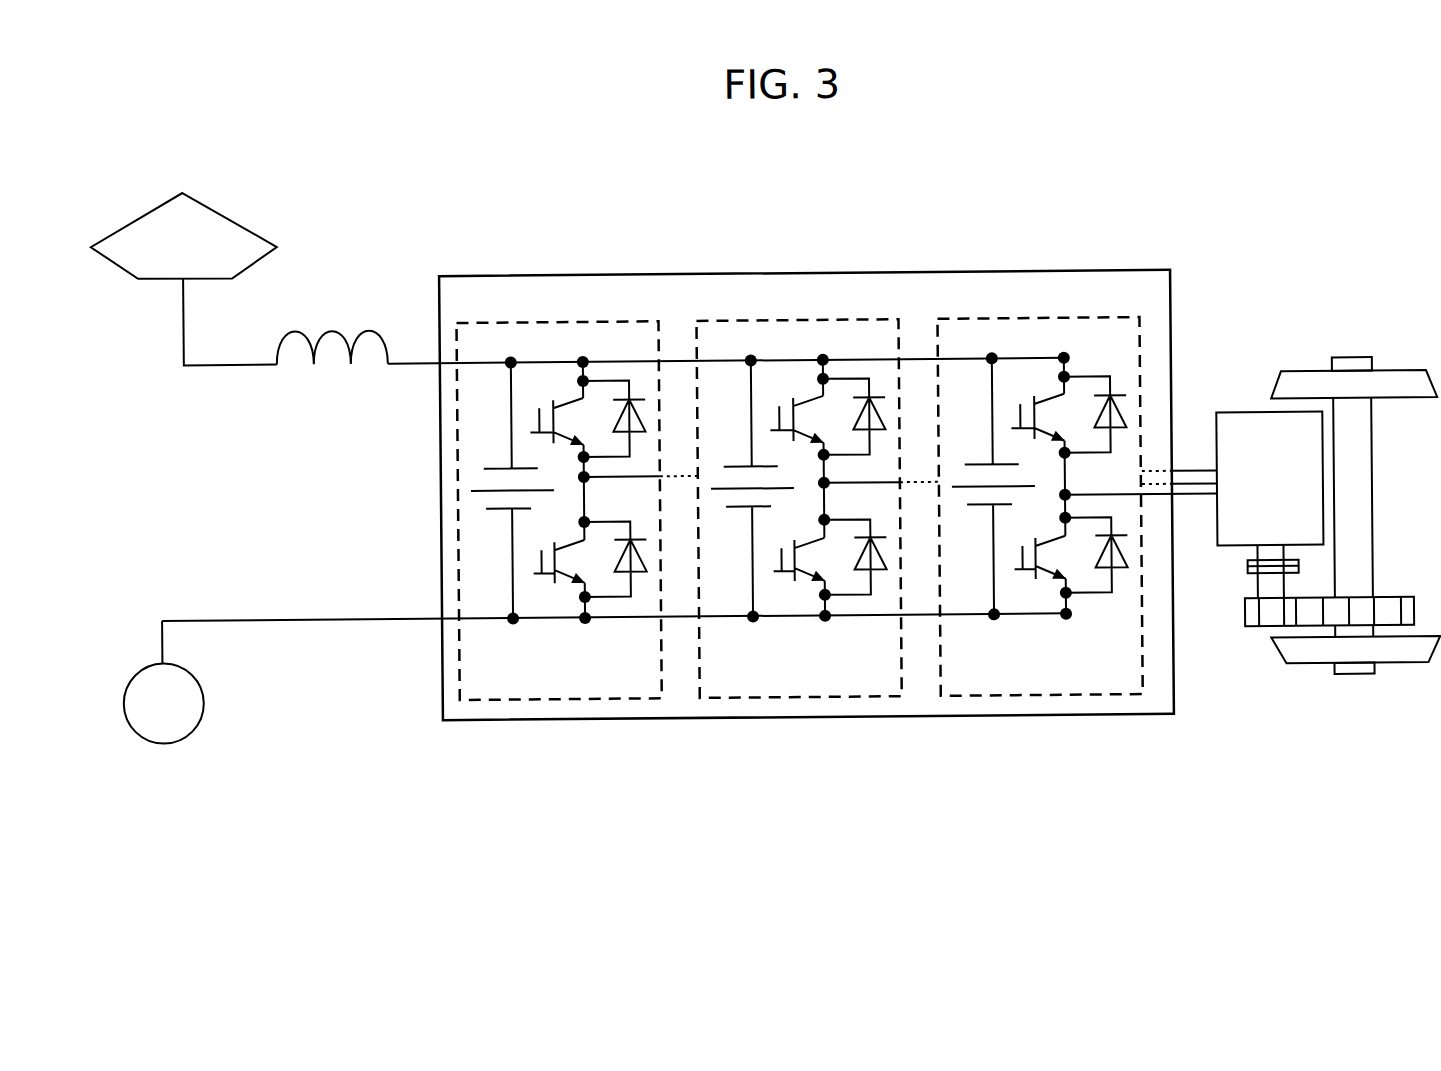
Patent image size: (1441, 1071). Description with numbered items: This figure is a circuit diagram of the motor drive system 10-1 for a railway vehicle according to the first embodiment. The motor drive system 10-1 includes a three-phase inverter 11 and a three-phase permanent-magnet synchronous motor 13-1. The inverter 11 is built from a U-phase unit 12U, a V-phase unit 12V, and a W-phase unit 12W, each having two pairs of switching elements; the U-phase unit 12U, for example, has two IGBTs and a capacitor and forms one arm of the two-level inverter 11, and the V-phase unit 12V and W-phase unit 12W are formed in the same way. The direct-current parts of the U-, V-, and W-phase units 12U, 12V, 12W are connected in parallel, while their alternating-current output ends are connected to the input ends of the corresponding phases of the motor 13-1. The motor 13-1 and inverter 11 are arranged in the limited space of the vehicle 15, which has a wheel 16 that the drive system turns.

The motor drive system 10-1 is at (917, 198).
The three-phase inverter 11 is at (898, 724).
The U-phase unit 12U is at (551, 697).
The V-phase unit 12V is at (791, 699).
The W-phase unit 12W is at (1000, 699).
The permanent-magnet synchronous motor 13-1 is at (1222, 549).
The vehicle 15 is at (1396, 371).
The wheel 16 is at (138, 731).